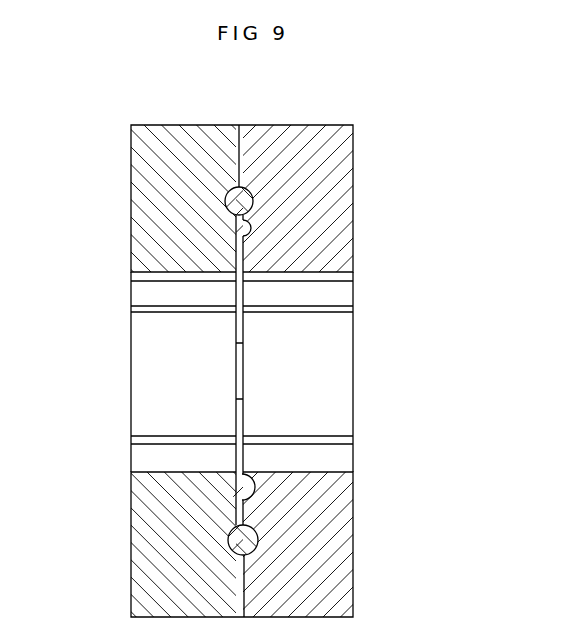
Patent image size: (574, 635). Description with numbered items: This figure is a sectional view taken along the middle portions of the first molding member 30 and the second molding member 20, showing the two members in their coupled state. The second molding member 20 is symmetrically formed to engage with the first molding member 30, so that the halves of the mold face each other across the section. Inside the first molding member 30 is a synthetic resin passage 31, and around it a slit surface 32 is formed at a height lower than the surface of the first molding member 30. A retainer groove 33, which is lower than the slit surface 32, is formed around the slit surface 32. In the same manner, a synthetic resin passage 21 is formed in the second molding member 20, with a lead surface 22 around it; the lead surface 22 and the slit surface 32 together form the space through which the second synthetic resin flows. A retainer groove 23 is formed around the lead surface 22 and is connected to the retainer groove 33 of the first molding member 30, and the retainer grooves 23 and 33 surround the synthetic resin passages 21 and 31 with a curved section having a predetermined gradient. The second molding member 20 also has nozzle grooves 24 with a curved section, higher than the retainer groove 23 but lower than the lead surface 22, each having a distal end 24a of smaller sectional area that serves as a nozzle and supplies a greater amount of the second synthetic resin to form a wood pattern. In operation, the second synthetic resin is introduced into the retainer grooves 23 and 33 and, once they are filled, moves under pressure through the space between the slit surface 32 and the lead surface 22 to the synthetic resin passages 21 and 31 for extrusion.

The second molding member 20 is at (348, 153).
The synthetic resin passage 21 is at (347, 413).
The lead surface 22 is at (243, 258).
The retainer groove 23 is at (250, 195).
The nozzle groove 24 is at (248, 226).
The distal end 24a is at (256, 488).
The first molding member 30 is at (131, 171).
The synthetic resin passage 31 is at (138, 404).
The slit surface 32 is at (232, 288).
The retainer groove 33 is at (233, 187).